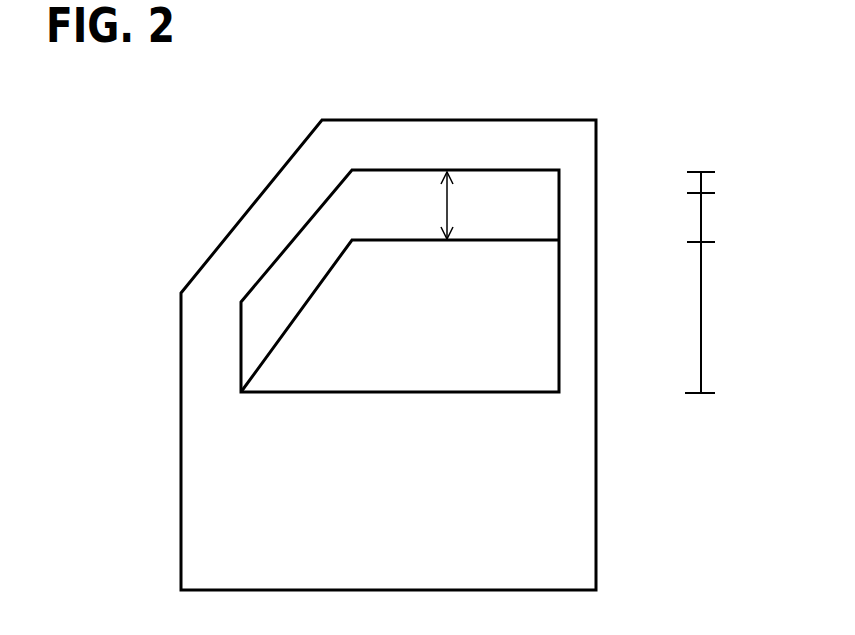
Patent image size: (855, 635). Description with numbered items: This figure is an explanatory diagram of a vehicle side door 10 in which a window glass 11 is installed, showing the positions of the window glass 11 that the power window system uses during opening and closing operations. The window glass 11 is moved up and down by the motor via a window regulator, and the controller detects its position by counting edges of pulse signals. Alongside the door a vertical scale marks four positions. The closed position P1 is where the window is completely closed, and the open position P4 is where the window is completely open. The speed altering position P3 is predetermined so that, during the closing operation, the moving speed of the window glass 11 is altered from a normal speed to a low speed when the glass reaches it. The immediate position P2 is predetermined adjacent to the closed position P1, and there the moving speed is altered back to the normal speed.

The side door 10 is at (528, 123).
The window glass 11 is at (547, 289).
The closed position P1 is at (725, 173).
The immediate position P2 is at (725, 196).
The speed altering position P3 is at (725, 244).
The open position P4 is at (724, 396).